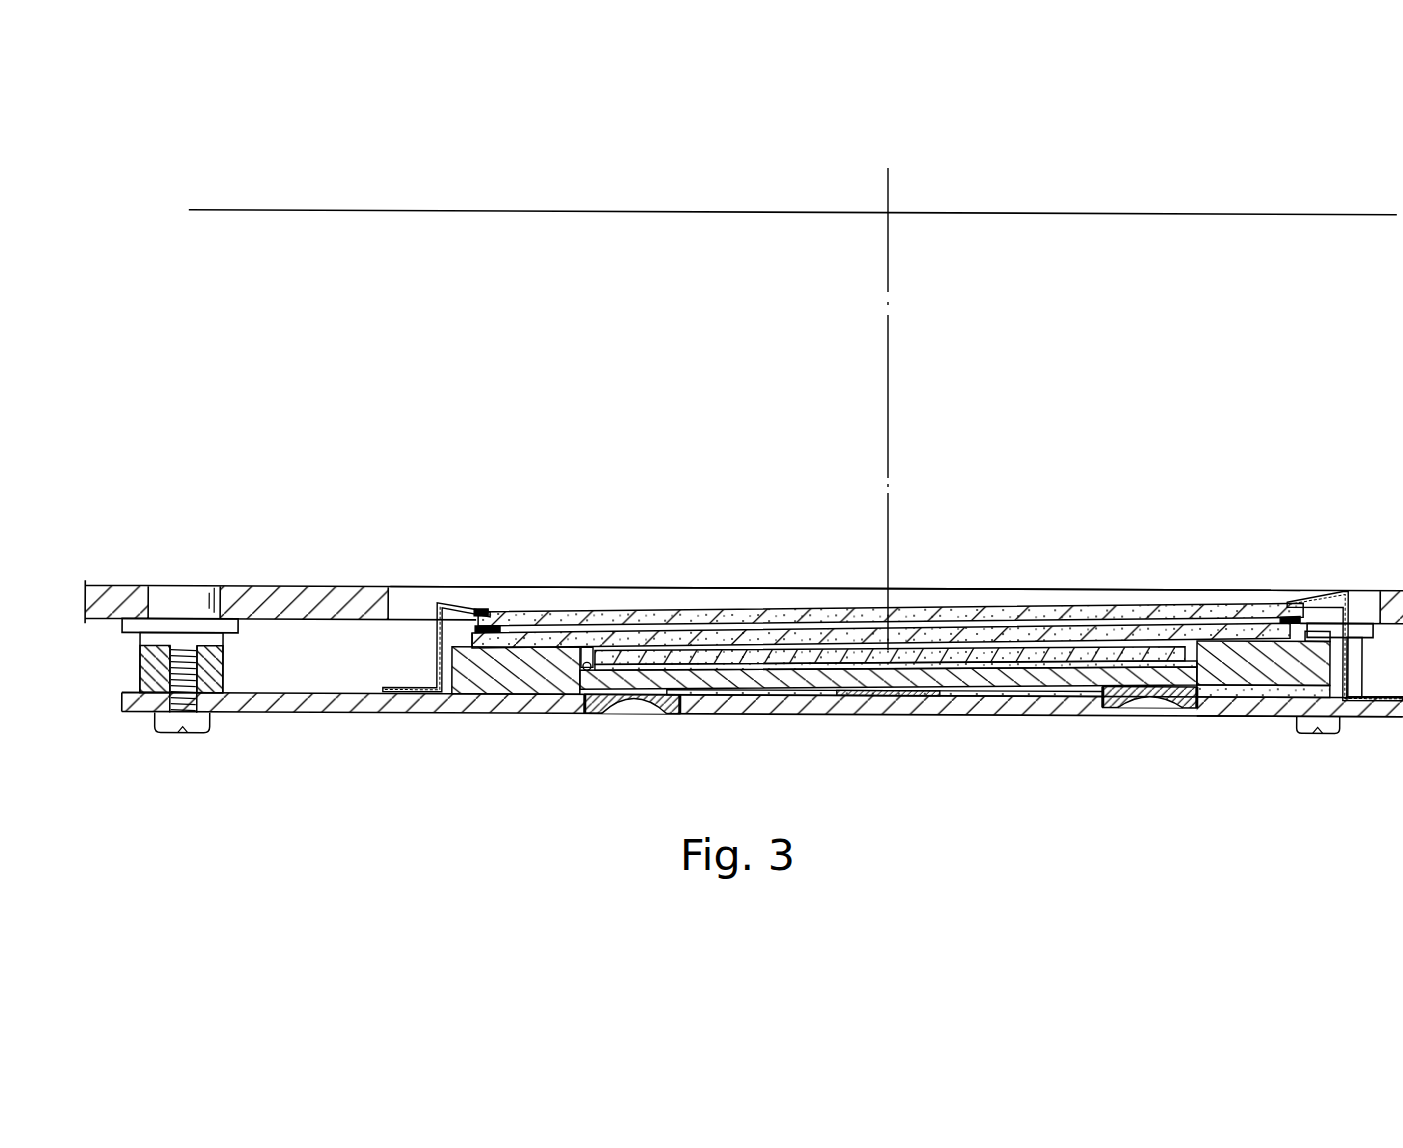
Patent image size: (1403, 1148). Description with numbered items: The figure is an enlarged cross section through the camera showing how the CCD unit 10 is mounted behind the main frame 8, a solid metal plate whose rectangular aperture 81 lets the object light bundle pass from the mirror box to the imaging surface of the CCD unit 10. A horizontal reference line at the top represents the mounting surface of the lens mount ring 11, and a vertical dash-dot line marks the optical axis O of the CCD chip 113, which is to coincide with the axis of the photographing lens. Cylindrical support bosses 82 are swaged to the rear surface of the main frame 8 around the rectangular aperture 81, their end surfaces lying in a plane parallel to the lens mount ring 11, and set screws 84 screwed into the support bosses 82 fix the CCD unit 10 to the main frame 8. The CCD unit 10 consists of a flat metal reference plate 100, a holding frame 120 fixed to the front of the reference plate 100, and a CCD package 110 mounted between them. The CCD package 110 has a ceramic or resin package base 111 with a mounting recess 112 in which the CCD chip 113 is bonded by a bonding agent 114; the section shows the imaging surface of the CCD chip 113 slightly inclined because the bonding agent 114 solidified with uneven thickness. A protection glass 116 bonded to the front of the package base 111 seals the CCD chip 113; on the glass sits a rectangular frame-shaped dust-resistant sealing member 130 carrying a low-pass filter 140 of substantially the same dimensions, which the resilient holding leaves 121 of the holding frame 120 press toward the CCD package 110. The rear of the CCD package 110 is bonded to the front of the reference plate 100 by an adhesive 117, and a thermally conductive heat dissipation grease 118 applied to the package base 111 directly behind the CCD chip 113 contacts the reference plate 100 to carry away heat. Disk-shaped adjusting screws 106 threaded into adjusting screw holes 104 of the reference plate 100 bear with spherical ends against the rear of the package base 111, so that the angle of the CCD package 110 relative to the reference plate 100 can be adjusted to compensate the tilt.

The main frame 8 is at (342, 598).
The CCD unit 10 is at (1232, 743).
The lens mount ring 11 is at (946, 212).
The rectangular aperture 81 is at (800, 600).
The cylindrical support boss 82 is at (138, 650).
The set screw 84 is at (177, 720).
The reference plate 100 is at (315, 702).
The adjusting screw hole 104 is at (663, 704).
The adjusting screw 106 is at (624, 700).
The CCD package 110 is at (1054, 604).
The package base 111 is at (500, 672).
The mounting recess 112 is at (588, 670).
The CCD chip 113 is at (797, 655).
The bonding agent 114 is at (693, 667).
The protection glass 116 is at (1057, 630).
The adhesive 117 is at (990, 692).
The heat dissipation grease 118 is at (888, 692).
The holding frame 120 is at (437, 662).
The holding leaf 121 is at (465, 607).
The dust-resistant sealing member 130 is at (513, 622).
The low-pass filter 140 is at (628, 613).
The optical axis O is at (888, 355).